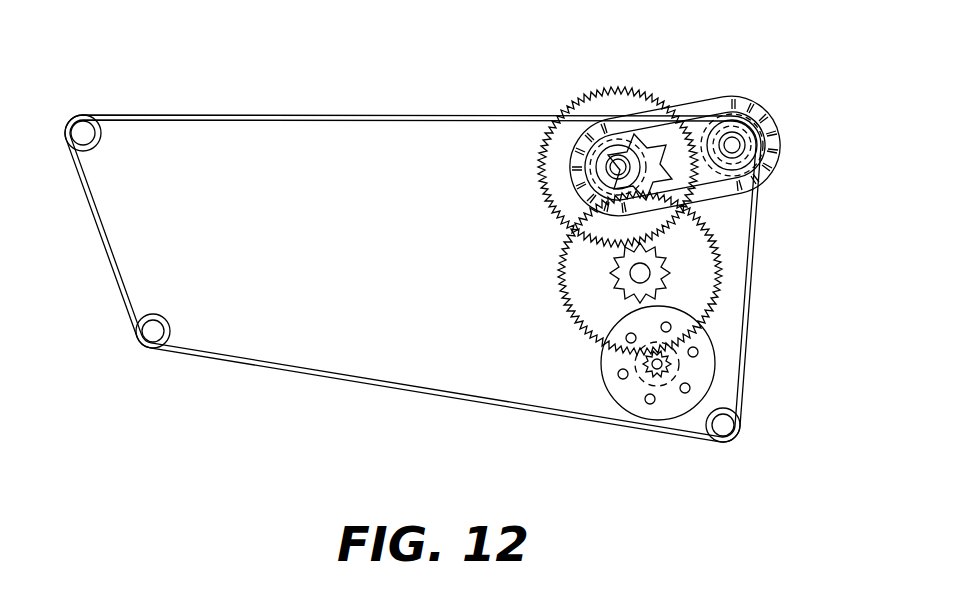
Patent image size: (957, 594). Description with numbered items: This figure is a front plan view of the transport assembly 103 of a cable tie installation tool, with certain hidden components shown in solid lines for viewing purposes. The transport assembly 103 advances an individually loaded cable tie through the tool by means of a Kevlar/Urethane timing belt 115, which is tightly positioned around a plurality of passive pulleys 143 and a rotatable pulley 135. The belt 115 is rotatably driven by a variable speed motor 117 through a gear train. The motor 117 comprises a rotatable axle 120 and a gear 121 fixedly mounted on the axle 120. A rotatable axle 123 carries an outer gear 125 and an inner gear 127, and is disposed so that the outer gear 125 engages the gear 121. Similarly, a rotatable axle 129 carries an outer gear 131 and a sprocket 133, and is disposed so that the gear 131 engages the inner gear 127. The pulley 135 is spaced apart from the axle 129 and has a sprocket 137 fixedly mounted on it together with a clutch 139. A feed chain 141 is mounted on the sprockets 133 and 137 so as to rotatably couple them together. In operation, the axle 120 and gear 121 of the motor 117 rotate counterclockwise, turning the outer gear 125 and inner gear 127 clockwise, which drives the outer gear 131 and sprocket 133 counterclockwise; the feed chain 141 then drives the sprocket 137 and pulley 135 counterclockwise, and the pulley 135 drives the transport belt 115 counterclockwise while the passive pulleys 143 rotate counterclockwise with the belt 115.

The transport assembly 103 is at (461, 262).
The timing belt 115 is at (270, 115).
The variable speed motor 117 is at (714, 363).
The rotatable axle 120 is at (642, 363).
The gear 121 is at (653, 384).
The rotatable axle 123 is at (632, 274).
The outer gear 125 is at (723, 260).
The inner gear 127 is at (668, 282).
The rotatable axle 129 is at (613, 173).
The outer gear 131 is at (590, 92).
The sprocket 133 is at (643, 148).
The rotatable pulley 135 is at (780, 132).
The sprocket 137 is at (700, 113).
The clutch 139 is at (734, 138).
The feed chain 141 is at (783, 160).
The passive pulleys 143 is at (94, 118).